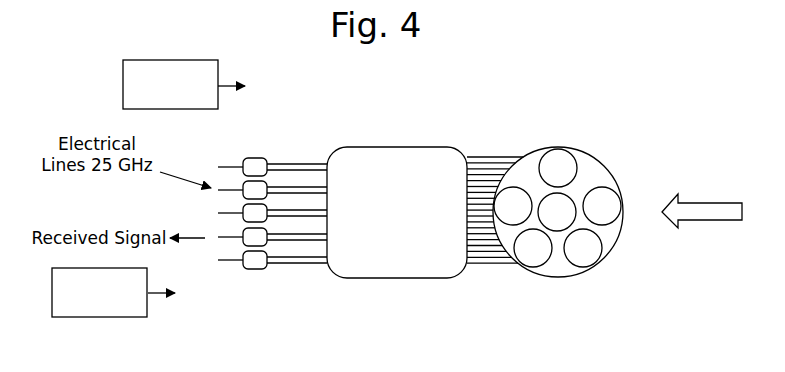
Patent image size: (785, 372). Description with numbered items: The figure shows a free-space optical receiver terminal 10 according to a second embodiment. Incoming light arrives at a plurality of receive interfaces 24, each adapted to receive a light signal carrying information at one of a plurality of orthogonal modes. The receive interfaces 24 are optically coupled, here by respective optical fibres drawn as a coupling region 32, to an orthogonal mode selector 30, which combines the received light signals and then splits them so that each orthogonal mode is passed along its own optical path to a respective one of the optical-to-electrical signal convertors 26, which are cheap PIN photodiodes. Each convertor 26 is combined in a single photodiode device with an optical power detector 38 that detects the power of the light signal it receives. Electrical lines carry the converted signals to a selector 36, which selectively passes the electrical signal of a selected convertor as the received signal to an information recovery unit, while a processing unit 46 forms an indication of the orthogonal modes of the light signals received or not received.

The FSO receiver terminal 10 is at (613, 161).
The receive interface 24 is at (588, 253).
The optical-to-electrical signal convertor 26 is at (225, 261).
The orthogonal mode selector 30 is at (390, 147).
The connection region 32 is at (491, 157).
The selector 36 is at (289, 163).
The optical power detector 38 is at (255, 270).
The processing unit 46 is at (183, 60).